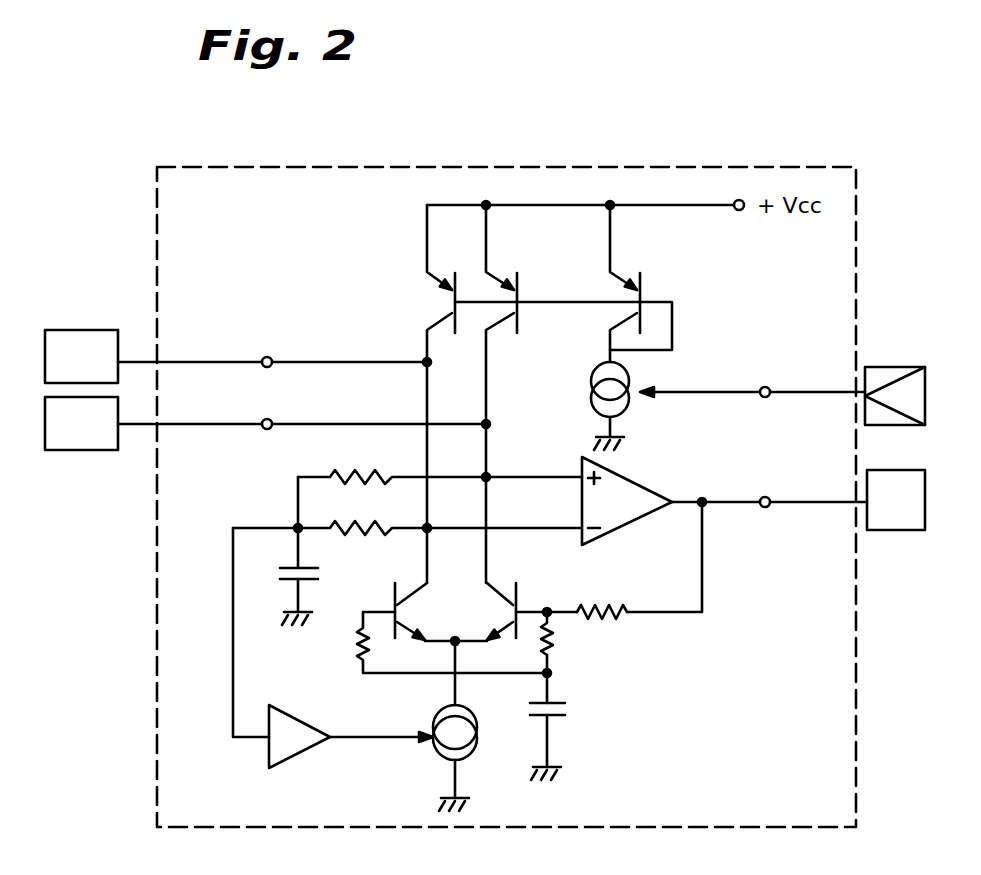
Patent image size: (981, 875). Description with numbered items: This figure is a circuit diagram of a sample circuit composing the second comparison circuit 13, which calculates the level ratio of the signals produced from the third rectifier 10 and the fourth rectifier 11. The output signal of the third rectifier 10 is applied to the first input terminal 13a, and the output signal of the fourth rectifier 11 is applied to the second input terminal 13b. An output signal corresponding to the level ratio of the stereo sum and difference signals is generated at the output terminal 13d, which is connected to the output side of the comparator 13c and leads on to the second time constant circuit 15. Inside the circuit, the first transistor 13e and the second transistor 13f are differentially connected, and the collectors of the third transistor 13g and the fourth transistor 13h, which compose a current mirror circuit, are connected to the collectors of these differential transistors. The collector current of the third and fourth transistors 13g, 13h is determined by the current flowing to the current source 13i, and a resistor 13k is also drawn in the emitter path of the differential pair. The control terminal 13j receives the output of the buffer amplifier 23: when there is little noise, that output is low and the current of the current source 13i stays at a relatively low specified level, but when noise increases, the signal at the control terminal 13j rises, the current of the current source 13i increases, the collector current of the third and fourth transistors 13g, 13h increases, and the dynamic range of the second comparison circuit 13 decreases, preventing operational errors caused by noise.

The third rectifier 10 is at (85, 330).
The fourth rectifier 11 is at (80, 450).
The second comparison circuit 13 is at (688, 167).
The first input terminal 13a is at (265, 357).
The second input terminal 13b is at (265, 429).
The comparator 13c is at (630, 478).
The output terminal 13d is at (765, 508).
The first transistor 13e is at (408, 610).
The second transistor 13f is at (494, 606).
The third transistor 13g is at (438, 300).
The fourth transistor 13h is at (488, 286).
The current source 13i is at (590, 390).
The control terminal 13j is at (765, 387).
The resistor 13k is at (558, 648).
The second time constant circuit 15 is at (895, 531).
The buffer amplifier 23 is at (900, 367).